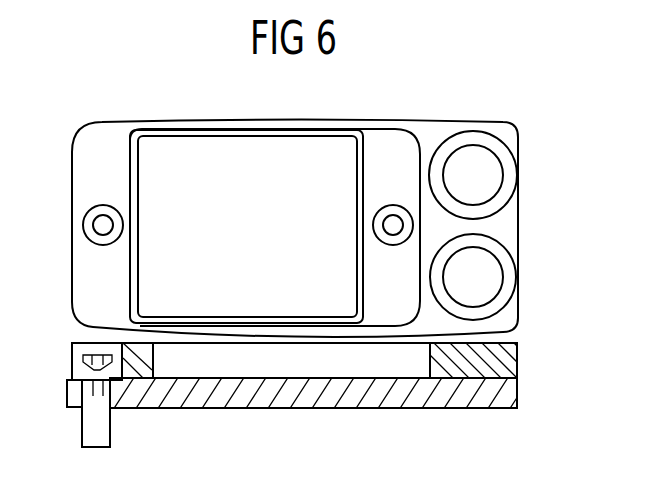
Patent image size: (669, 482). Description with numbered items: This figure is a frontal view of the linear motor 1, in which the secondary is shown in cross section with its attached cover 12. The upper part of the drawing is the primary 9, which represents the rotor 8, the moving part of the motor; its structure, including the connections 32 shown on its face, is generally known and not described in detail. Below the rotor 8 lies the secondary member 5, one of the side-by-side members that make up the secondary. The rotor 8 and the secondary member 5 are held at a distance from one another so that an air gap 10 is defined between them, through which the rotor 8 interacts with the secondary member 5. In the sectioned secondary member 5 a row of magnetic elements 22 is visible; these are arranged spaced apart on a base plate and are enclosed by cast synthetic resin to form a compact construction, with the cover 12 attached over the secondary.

The linear motor 1 is at (55, 103).
The secondary member 5 is at (293, 466).
The rotor 8 is at (246, 152).
The primary 9 is at (343, 118).
The air gap 10 is at (511, 337).
The cover 12 is at (198, 343).
The magnetic elements 22 is at (342, 368).
The connections 32 is at (490, 185).